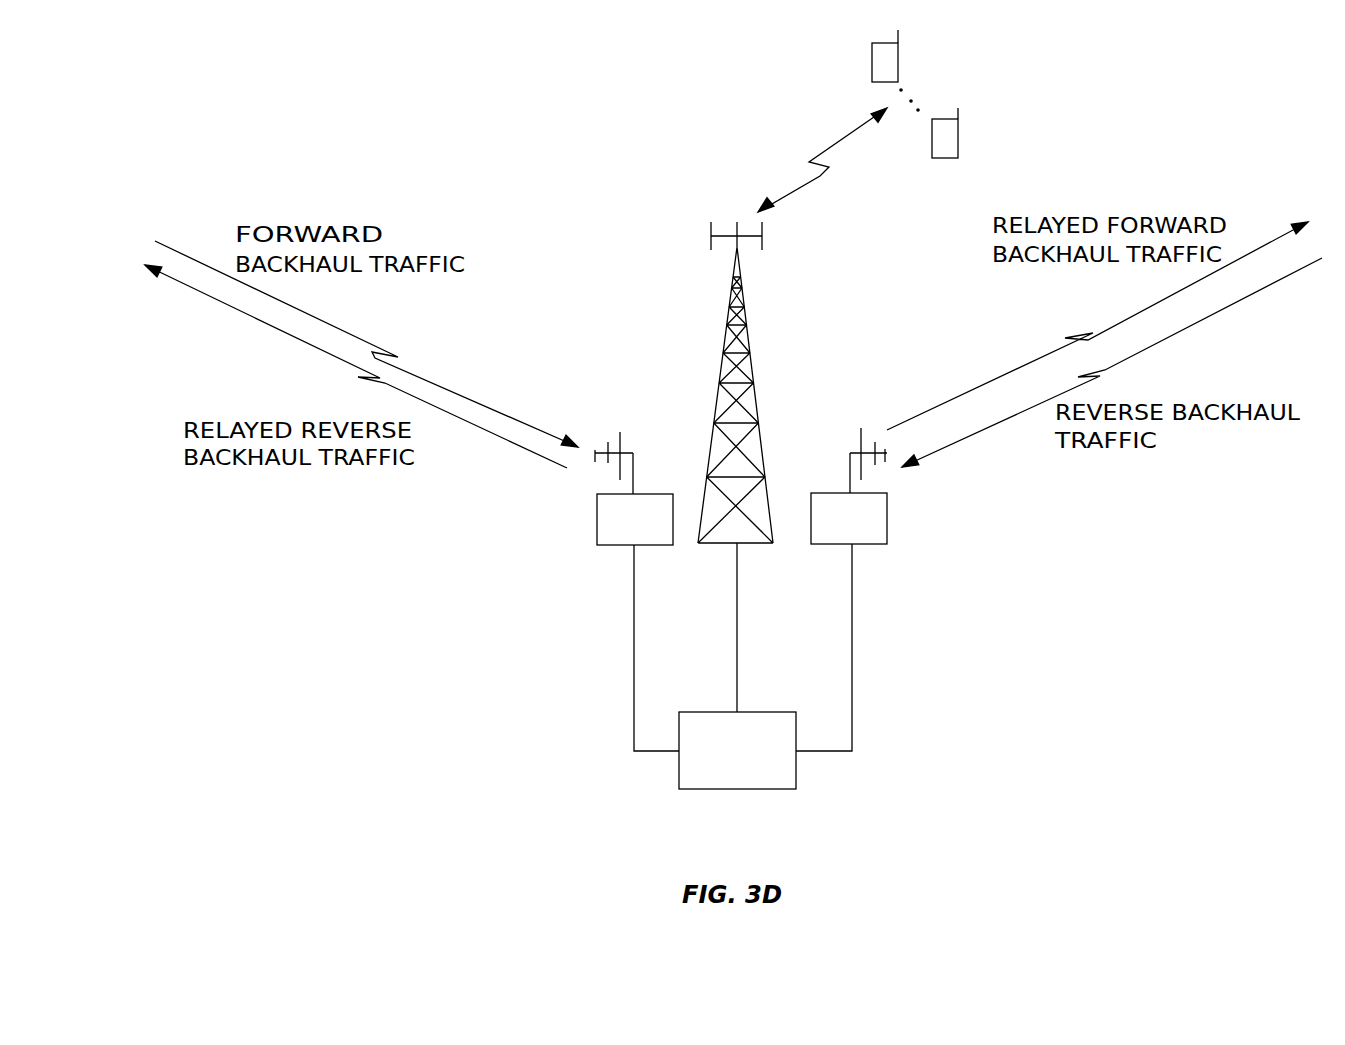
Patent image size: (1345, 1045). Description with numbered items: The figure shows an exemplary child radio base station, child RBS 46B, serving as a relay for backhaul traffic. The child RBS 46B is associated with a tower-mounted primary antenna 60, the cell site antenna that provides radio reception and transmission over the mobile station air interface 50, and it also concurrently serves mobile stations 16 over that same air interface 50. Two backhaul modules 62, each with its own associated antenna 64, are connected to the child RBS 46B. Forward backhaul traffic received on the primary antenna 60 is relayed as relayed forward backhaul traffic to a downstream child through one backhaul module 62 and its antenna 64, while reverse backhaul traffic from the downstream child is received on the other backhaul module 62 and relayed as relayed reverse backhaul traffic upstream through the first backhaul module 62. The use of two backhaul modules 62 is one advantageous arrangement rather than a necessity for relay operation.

The mobile station 16 is at (898, 60).
The air interface 50 is at (830, 170).
The primary antenna 60 is at (725, 545).
The backhaul module 62 is at (617, 545).
The antenna 64 is at (630, 451).
The child RBS 46B is at (738, 789).